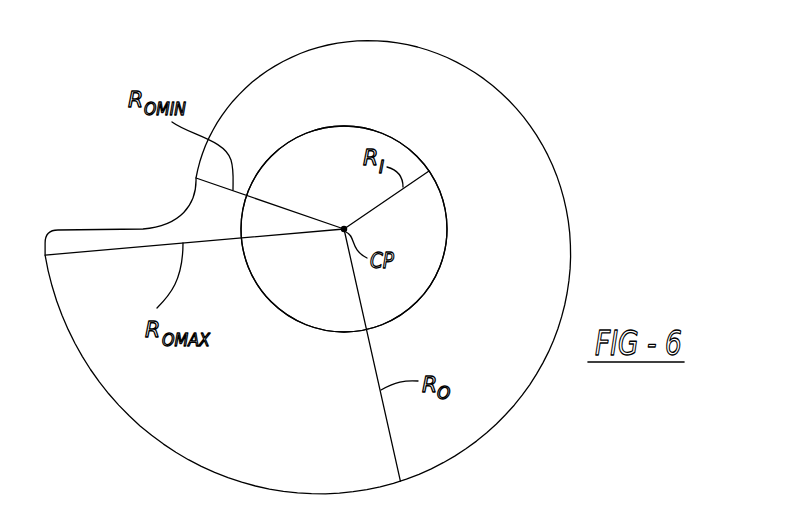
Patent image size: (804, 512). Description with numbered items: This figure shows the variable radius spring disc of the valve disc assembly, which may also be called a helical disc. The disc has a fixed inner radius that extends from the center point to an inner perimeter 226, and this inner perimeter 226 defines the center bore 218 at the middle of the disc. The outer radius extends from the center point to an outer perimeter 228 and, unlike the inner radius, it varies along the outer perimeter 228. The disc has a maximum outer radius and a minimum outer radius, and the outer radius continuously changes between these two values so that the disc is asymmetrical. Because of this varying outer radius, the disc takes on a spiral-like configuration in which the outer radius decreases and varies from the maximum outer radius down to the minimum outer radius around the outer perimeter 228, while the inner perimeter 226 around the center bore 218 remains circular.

The center bore 218 is at (322, 153).
The inner perimeter 226 is at (261, 286).
The outer perimeter 228 is at (572, 224).